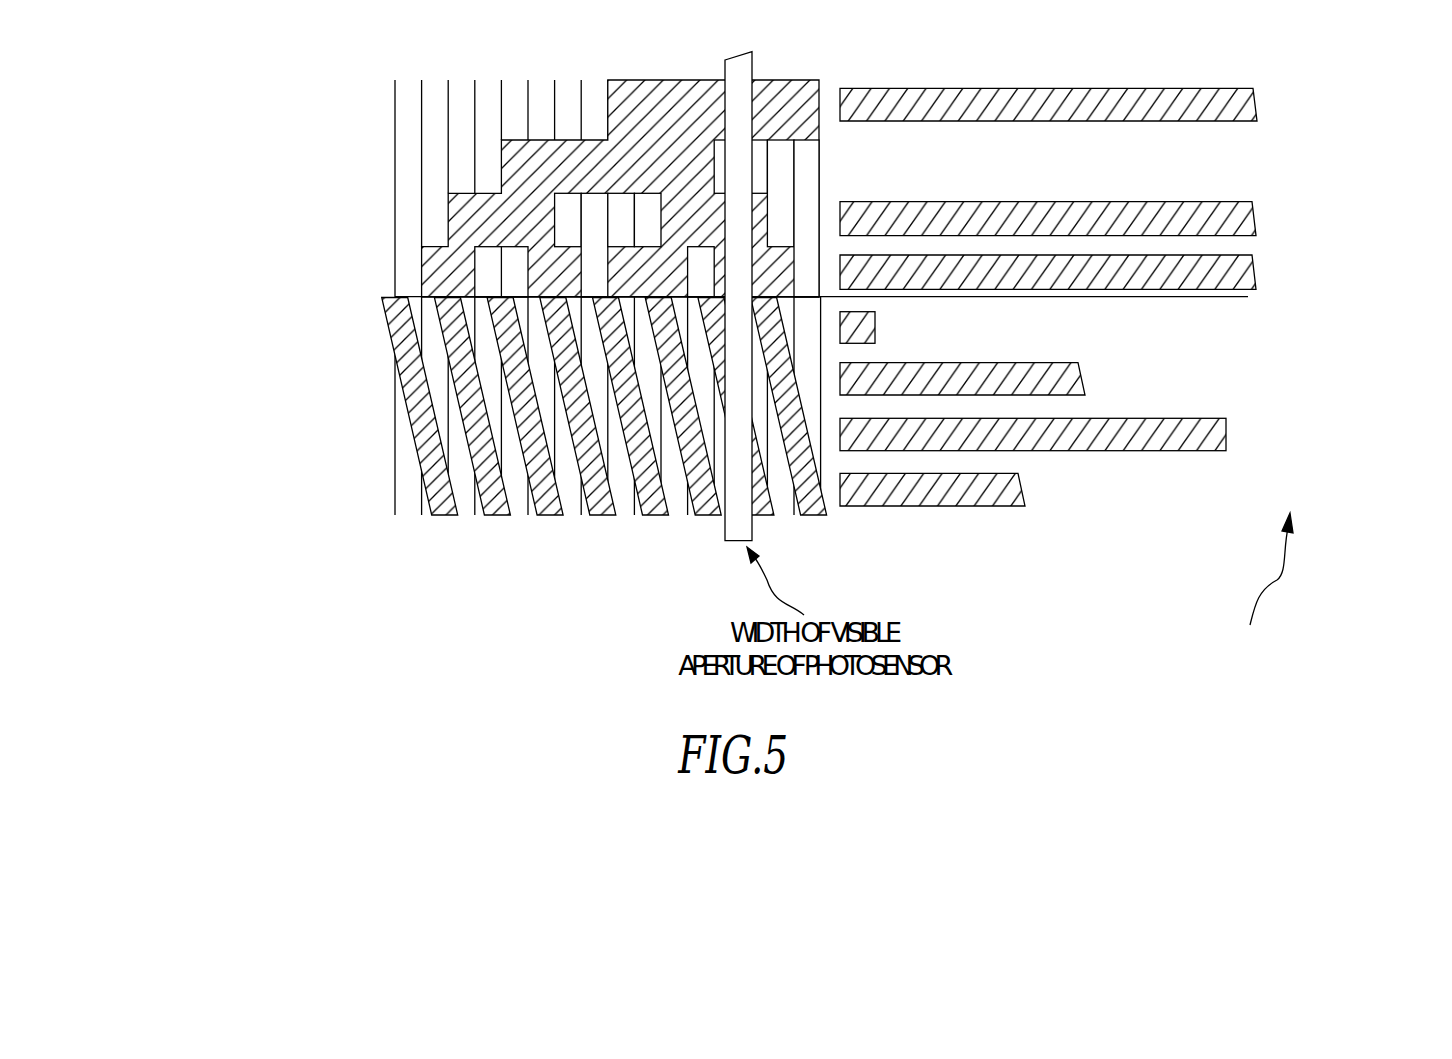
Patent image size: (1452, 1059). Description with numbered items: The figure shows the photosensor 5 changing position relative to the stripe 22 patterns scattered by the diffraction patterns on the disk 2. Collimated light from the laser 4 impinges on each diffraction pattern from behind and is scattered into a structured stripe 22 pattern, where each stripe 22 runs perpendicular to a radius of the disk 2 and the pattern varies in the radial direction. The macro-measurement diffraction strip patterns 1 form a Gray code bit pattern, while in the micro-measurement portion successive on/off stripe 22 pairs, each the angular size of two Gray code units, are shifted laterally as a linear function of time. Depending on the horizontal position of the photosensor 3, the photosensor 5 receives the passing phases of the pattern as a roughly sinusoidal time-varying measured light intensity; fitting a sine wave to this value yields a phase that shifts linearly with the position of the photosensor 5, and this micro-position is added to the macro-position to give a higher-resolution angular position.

The macro-measurement diffraction strip patterns 1 is at (658, 188).
The disk 2 is at (642, 424).
The horizontal position of photosensor 3 is at (722, 540).
The collimated laser 4 is at (1340, 492).
The photosensor 5 is at (1240, 623).
The stripe 22 is at (402, 468).